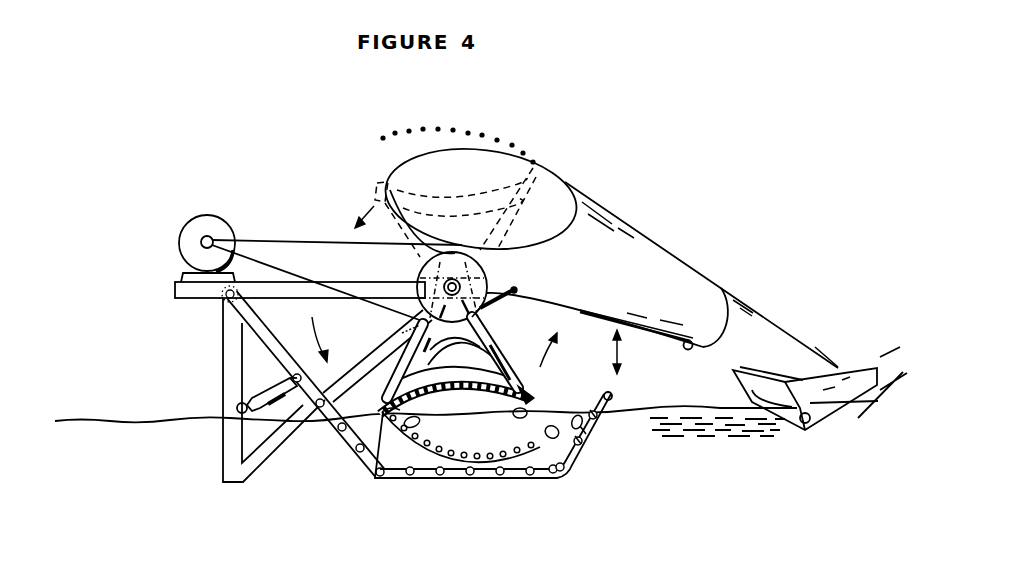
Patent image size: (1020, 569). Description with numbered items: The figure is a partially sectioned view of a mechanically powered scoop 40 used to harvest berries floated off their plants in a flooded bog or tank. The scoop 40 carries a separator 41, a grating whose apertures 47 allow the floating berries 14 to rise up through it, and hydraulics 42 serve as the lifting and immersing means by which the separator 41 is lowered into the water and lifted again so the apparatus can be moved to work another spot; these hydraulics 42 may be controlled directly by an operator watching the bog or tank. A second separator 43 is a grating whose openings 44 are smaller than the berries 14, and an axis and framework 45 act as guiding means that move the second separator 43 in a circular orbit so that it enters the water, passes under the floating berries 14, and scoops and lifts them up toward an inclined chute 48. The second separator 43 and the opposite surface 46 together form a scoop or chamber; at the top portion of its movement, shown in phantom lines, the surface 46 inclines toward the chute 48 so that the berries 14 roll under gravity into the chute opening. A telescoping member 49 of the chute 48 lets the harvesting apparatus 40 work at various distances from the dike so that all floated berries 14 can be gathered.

The powered scoop 40 is at (353, 283).
The separator 41 is at (363, 467).
The hydraulics 42 is at (247, 395).
The second separator 43 is at (423, 450).
The openings 44 is at (490, 458).
The axis and framework 45 is at (447, 310).
The opposite surface 46 is at (527, 397).
The apertures 47 is at (567, 464).
The inclined chute 48 is at (600, 248).
The telescoping member 49 is at (770, 335).
The berries 14 is at (586, 428).